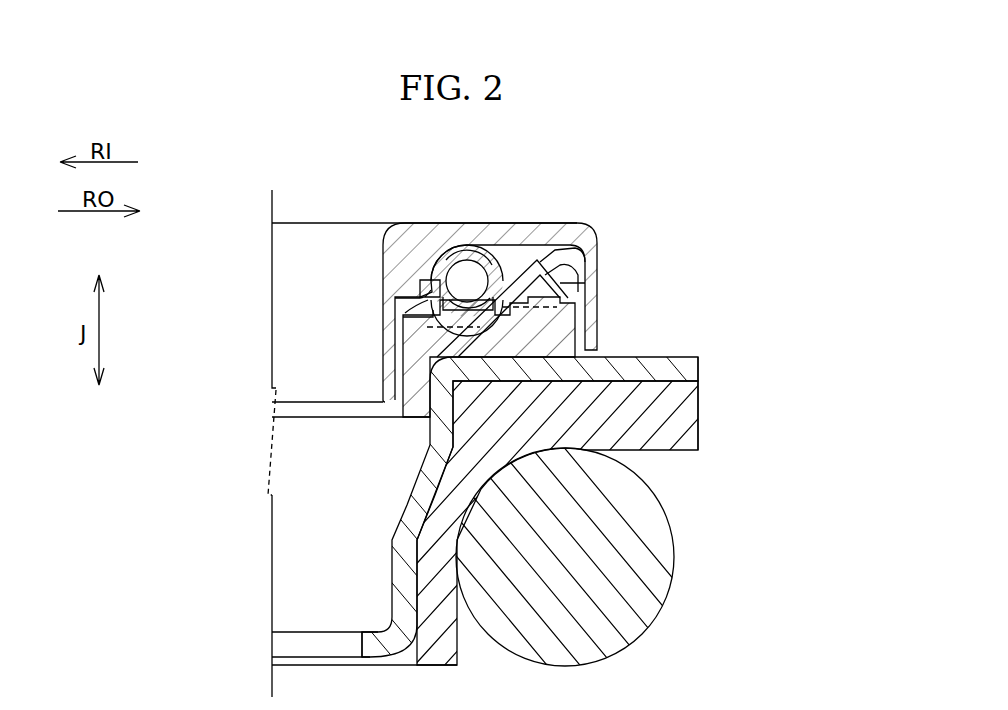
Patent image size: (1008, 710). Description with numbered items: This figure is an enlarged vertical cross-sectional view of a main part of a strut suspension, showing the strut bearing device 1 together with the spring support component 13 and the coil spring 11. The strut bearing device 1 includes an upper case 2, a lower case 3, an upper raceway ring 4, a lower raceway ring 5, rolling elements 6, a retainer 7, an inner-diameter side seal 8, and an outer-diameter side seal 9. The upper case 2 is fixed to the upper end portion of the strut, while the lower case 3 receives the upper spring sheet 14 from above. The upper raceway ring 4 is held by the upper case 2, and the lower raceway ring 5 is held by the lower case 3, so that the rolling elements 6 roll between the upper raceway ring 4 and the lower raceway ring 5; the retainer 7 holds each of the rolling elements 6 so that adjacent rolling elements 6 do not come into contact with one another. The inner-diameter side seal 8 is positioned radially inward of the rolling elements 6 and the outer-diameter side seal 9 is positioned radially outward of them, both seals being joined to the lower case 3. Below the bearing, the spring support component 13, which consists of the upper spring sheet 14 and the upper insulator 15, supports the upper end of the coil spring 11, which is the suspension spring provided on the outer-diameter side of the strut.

The strut bearing device 1 is at (646, 227).
The upper case 2 is at (451, 200).
The lower case 3 is at (391, 369).
The upper raceway ring 4 is at (430, 290).
The lower raceway ring 5 is at (522, 273).
The rolling elements 6 is at (470, 290).
The retainer 7 is at (490, 272).
The inner-diameter side seal 8 is at (393, 321).
The outer-diameter side seal 9 is at (592, 297).
The coil spring 11 is at (638, 583).
The spring support component 13 is at (808, 356).
The upper spring sheet 14 is at (688, 367).
The upper insulator 15 is at (688, 414).